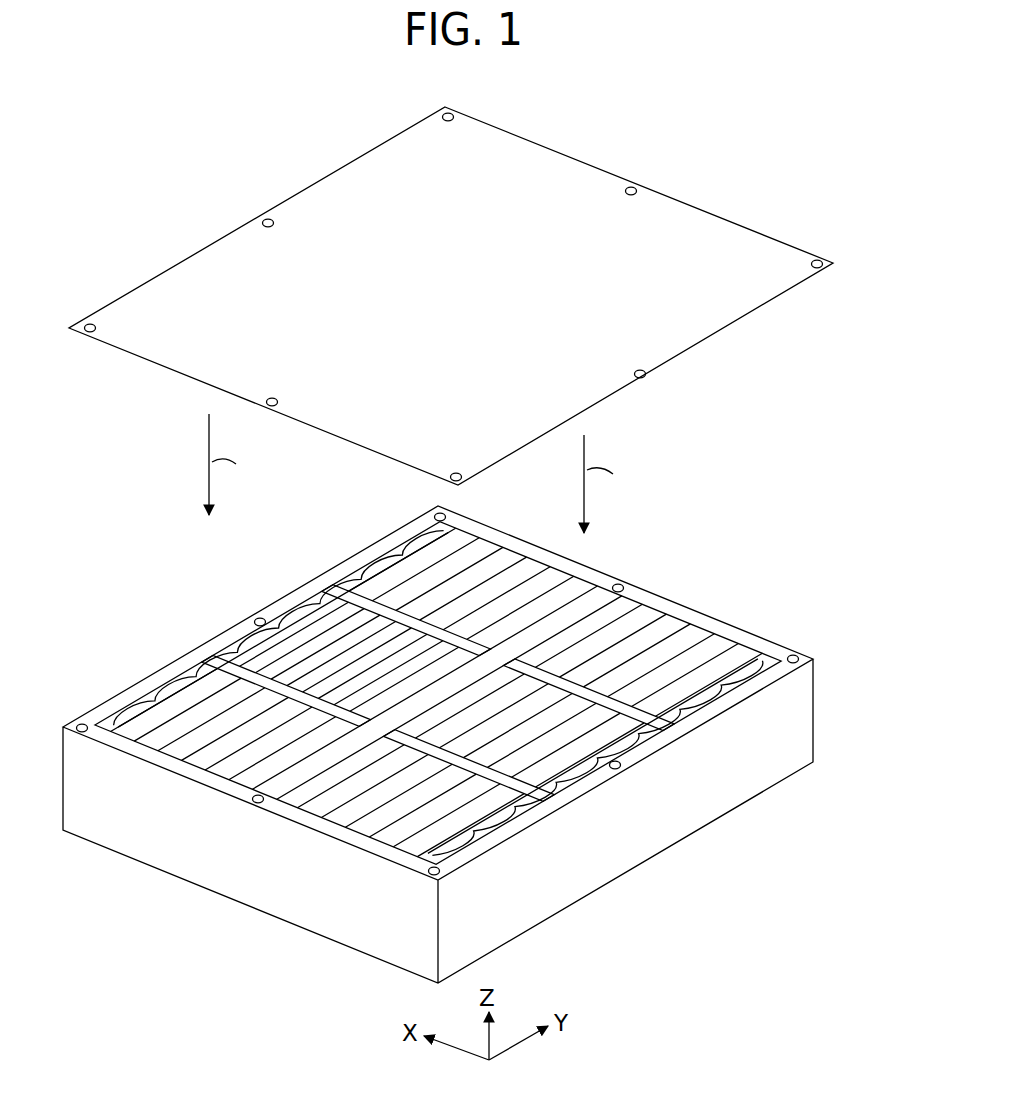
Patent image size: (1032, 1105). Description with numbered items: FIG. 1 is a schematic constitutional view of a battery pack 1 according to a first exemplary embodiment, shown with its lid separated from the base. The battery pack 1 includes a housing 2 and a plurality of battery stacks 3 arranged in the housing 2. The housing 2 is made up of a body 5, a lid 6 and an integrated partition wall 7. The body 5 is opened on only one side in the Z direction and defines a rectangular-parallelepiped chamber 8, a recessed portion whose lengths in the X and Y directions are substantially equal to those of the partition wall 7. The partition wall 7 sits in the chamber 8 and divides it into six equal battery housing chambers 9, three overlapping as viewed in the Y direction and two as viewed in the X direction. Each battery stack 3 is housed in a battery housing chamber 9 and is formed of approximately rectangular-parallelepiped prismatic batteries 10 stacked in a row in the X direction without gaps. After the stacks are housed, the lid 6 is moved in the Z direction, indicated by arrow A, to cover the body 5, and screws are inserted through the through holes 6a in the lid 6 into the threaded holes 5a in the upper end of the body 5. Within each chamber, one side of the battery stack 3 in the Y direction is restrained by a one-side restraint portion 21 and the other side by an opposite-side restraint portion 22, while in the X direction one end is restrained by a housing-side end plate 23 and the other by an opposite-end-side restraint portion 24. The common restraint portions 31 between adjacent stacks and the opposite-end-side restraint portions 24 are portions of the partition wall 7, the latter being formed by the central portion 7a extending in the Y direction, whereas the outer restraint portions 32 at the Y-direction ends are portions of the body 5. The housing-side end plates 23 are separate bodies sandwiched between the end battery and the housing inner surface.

The battery pack 1 is at (571, 142).
The housing 2 is at (692, 618).
The battery stack 3 is at (648, 613).
The body 5 is at (728, 787).
The threaded hole 5a is at (803, 655).
The lid 6 is at (709, 233).
The through hole 6a is at (818, 258).
The partition wall 7 is at (568, 612).
The portion of partition wall 7a is at (410, 710).
The chamber 8 is at (343, 827).
The battery housing chamber 9 is at (587, 645).
The prismatic battery 10 is at (398, 812).
The one-side restraint portion 21 is at (490, 775).
The opposite-side restraint portion 22 is at (620, 707).
The housing-side end plate 23 is at (600, 712).
The opposite-end-side restraint portion 24 is at (457, 678).
The common restraint portion 31 is at (260, 683).
The outer restraint portion 32 is at (172, 767).